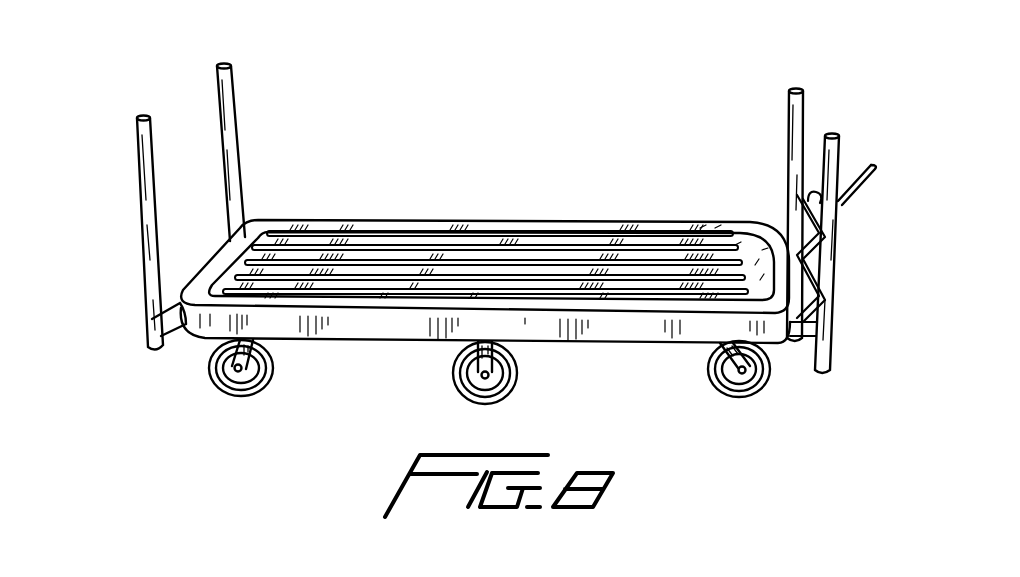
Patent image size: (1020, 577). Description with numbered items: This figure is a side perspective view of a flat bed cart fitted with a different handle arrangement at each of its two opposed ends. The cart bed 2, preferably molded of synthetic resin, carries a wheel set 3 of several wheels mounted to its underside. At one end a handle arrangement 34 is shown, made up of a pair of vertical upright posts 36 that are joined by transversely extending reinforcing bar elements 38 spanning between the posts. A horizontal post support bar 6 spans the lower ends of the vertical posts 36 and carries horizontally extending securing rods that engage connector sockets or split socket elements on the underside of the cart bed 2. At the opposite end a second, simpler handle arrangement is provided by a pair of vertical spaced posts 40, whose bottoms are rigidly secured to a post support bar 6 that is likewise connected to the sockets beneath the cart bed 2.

The cart bed 2 is at (480, 241).
The wheel set 3 is at (773, 370).
The horizontal post support bar 6 is at (170, 343).
The handle arrangement 34 is at (774, 198).
The vertical upright posts 36 is at (805, 103).
The reinforcing bar elements 38 is at (786, 226).
The vertical spaced posts 40 is at (139, 167).